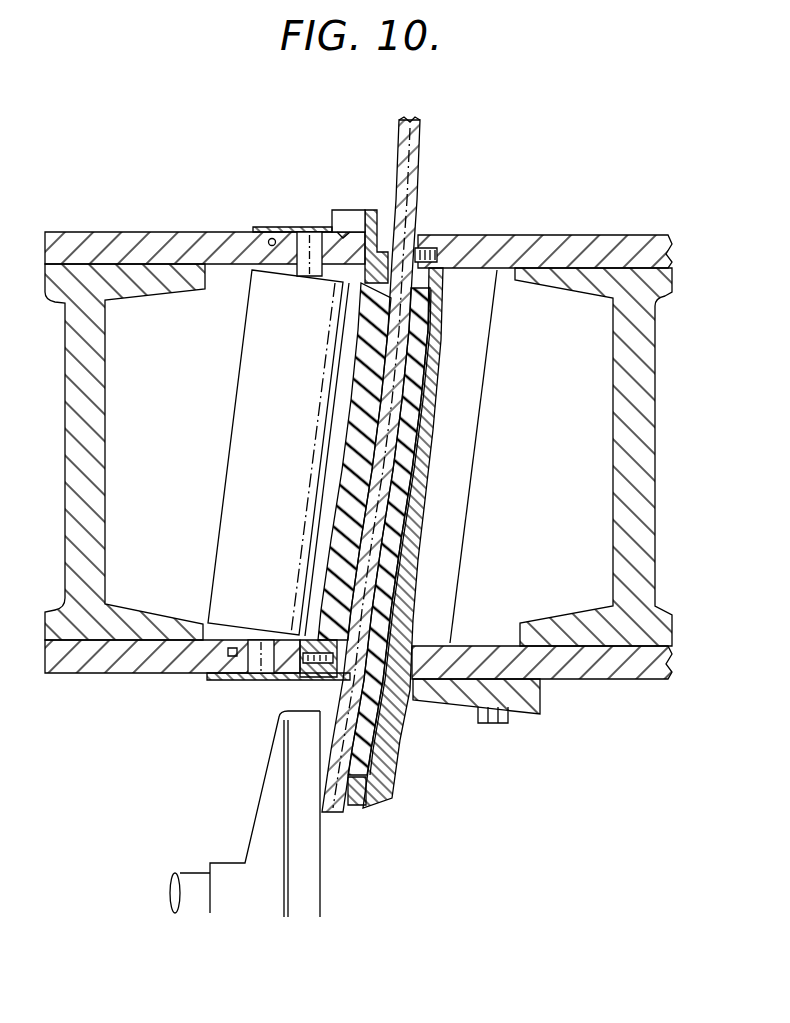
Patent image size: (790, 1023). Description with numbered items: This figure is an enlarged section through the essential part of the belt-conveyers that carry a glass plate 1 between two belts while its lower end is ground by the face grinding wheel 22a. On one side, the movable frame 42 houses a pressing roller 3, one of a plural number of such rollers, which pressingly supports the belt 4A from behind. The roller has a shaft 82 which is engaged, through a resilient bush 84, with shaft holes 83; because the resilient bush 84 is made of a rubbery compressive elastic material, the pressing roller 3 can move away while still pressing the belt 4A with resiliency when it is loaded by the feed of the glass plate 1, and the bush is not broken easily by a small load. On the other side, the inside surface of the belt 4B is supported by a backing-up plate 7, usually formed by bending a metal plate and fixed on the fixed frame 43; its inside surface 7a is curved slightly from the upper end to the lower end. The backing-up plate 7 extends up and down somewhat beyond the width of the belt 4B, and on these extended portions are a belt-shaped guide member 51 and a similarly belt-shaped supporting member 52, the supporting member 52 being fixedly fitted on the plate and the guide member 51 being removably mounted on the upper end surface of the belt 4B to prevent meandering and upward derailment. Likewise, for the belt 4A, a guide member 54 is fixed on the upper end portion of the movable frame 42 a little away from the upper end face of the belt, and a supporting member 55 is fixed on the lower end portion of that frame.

The glass plate 1 is at (421, 135).
The pressing roller 3 is at (282, 455).
The belt 4A is at (366, 322).
The belt 4B is at (418, 358).
The backing-up plate 7 is at (423, 470).
The inside surface 7a is at (427, 398).
The face grinding wheel 22a is at (310, 882).
The movable frame 42 is at (98, 236).
The fixed frame 43 is at (578, 240).
The guide member 51 is at (420, 252).
The supporting member 52 is at (354, 806).
The guide member 54 is at (383, 250).
The supporting member 55 is at (306, 632).
The shaft 82 is at (315, 231).
The shaft holes 83 is at (270, 242).
The resilient bush 84 is at (285, 231).